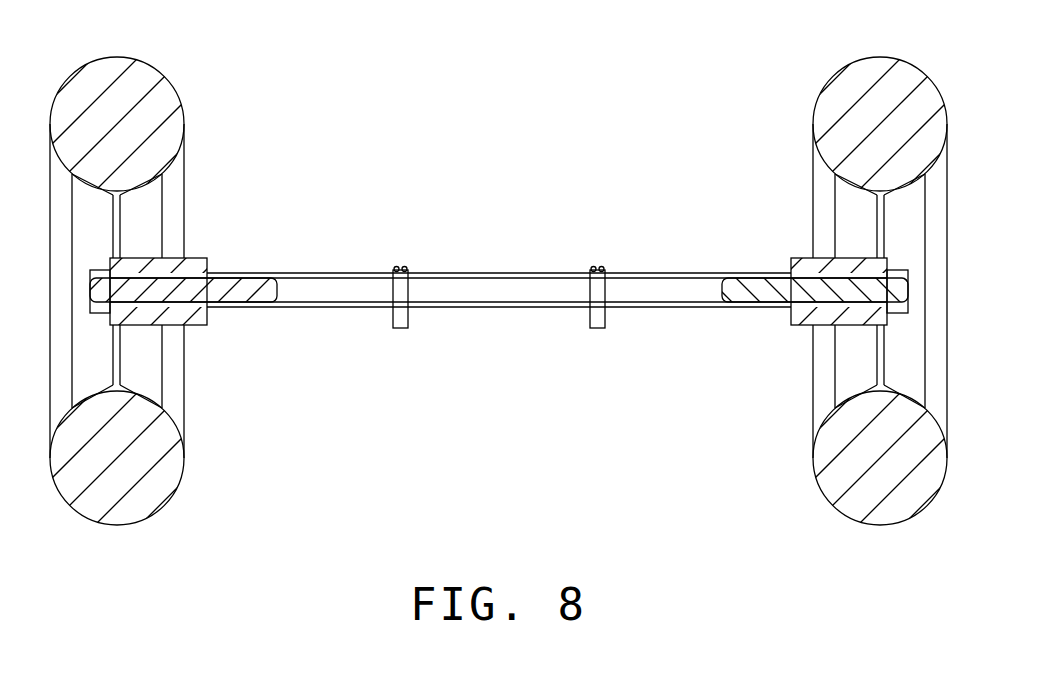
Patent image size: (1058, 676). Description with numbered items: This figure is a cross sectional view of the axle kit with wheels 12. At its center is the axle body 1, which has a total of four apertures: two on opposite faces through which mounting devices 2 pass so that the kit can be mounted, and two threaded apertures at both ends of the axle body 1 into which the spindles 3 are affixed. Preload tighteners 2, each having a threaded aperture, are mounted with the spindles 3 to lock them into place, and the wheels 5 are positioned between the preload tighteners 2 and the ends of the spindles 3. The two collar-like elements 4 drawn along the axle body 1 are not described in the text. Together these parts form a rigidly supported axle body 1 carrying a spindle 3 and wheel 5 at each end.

The axle body 1 is at (485, 277).
The preload tighteners 2 is at (227, 277).
The spindles 3 is at (220, 295).
The retaining clip 4 is at (400, 326).
The wheels 5 is at (163, 475).
The axle kit with wheels 12 is at (410, 170).